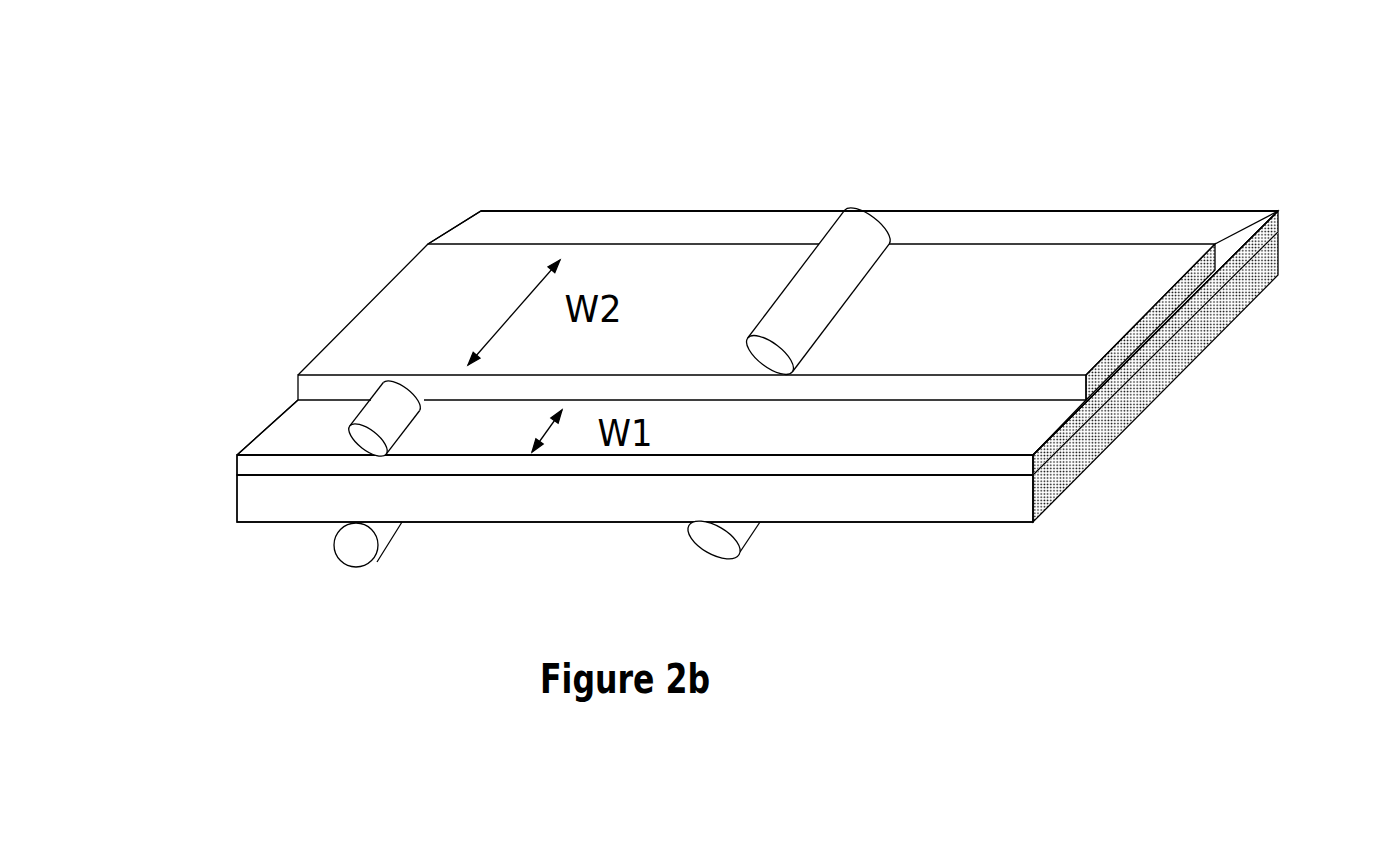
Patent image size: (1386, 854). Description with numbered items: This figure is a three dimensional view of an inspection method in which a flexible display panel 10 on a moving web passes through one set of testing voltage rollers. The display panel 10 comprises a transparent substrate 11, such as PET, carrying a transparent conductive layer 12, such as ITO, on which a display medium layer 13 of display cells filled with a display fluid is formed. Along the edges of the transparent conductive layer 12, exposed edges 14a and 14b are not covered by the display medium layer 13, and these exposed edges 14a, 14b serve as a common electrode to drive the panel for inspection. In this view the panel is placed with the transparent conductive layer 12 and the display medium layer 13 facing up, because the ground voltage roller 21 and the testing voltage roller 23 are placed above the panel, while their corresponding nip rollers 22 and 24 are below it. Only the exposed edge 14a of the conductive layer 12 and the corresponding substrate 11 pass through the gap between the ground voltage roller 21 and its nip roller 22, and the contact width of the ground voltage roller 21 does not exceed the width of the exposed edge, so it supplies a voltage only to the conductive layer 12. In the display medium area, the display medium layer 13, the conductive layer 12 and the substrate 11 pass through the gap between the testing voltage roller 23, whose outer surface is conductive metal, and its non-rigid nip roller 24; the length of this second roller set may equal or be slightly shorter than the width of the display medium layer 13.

The display panel 10 is at (1185, 380).
The transparent substrate 11 is at (220, 492).
The transparent conductive layer 12 is at (252, 413).
The display medium layer 13 is at (360, 260).
The exposed edge of the transparent conductive layer 14a is at (1013, 413).
The exposed edge of the transparent conductive layer 14b is at (1215, 225).
The ground voltage roller 21 is at (343, 445).
The nip roller 22 is at (362, 552).
The testing voltage roller 23 is at (778, 273).
The nip roller 24 is at (767, 570).